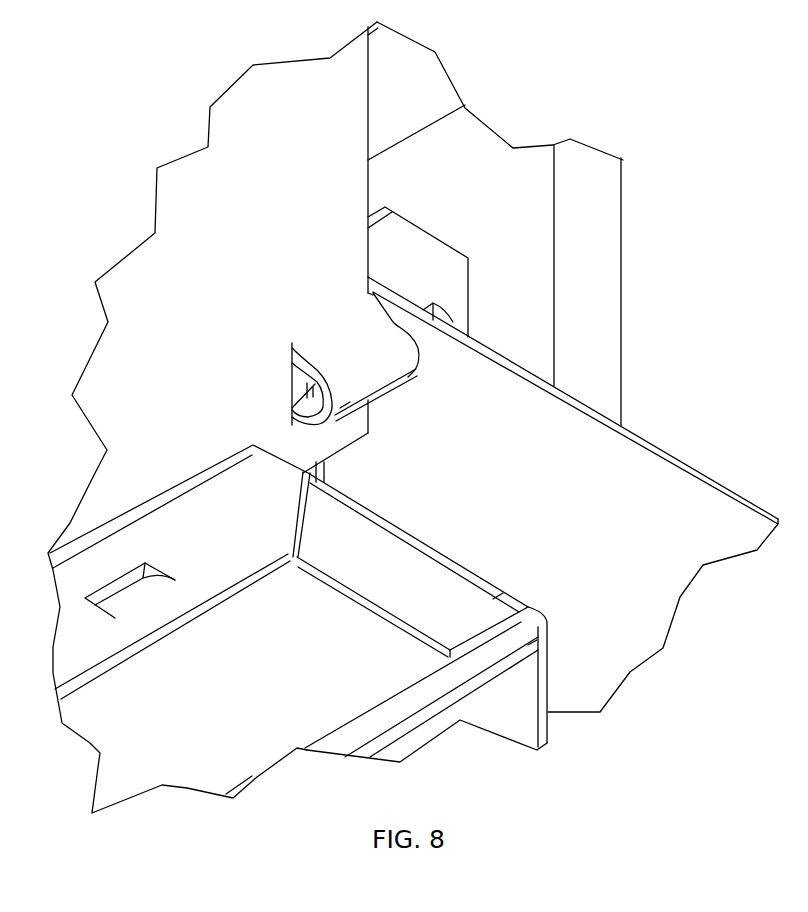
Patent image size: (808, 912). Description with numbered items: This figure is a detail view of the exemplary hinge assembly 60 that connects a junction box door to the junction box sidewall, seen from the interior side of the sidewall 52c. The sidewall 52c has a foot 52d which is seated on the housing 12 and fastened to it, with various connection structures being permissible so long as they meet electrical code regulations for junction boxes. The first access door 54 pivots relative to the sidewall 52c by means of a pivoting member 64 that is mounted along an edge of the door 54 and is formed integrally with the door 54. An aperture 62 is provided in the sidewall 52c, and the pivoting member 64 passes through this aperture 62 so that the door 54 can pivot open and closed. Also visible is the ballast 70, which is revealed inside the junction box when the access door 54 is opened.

The housing 12 is at (533, 163).
The sidewall 52c is at (574, 533).
The foot 52d is at (420, 248).
The first access door 54 is at (186, 317).
The hinge assembly 60 is at (405, 414).
The aperture 62 is at (423, 357).
The pivoting member 64 is at (385, 362).
The ballast 70 is at (254, 675).